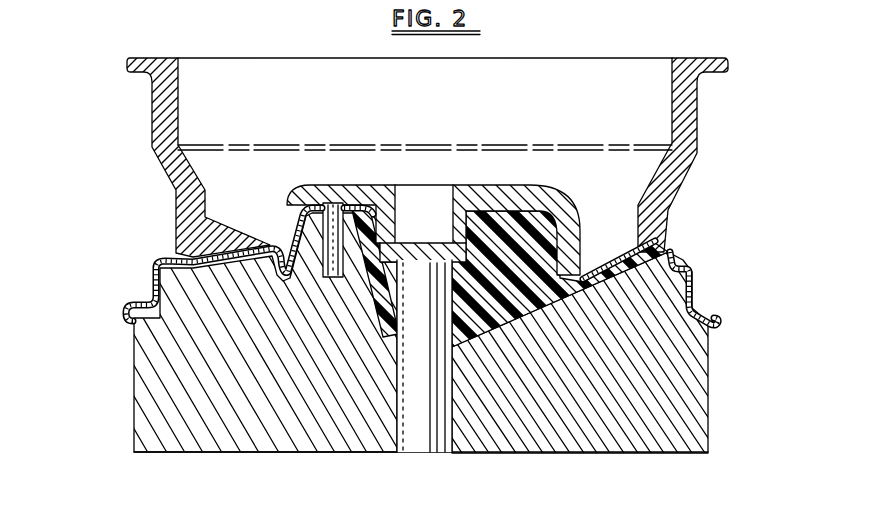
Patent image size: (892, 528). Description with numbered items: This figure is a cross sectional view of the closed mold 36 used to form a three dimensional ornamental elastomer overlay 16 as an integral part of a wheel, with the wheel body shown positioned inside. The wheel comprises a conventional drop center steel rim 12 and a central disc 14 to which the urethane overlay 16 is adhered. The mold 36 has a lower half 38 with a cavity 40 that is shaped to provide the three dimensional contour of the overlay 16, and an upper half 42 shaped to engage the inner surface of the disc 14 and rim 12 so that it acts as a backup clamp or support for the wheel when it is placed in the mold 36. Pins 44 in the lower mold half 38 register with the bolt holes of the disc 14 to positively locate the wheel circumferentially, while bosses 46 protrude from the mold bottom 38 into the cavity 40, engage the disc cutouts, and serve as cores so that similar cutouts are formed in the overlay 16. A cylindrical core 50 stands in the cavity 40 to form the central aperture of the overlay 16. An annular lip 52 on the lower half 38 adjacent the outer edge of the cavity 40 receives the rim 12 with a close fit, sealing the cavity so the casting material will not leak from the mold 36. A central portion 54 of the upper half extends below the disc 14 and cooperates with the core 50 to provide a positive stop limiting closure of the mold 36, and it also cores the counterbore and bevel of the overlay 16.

The drop center steel rim 12 is at (170, 191).
The central disc 14 is at (620, 278).
The ornamental three dimensional contoured overlay 16 is at (535, 295).
The mold 36 is at (112, 325).
The lower mold half 38 is at (133, 387).
The cavity 40 is at (527, 440).
The upper mold half 42 is at (272, 88).
The pins 44 is at (333, 215).
The bosses 46 is at (180, 266).
The cylindrical core 50 is at (423, 433).
The annular lip 52 is at (683, 287).
The central portion 54 is at (428, 255).